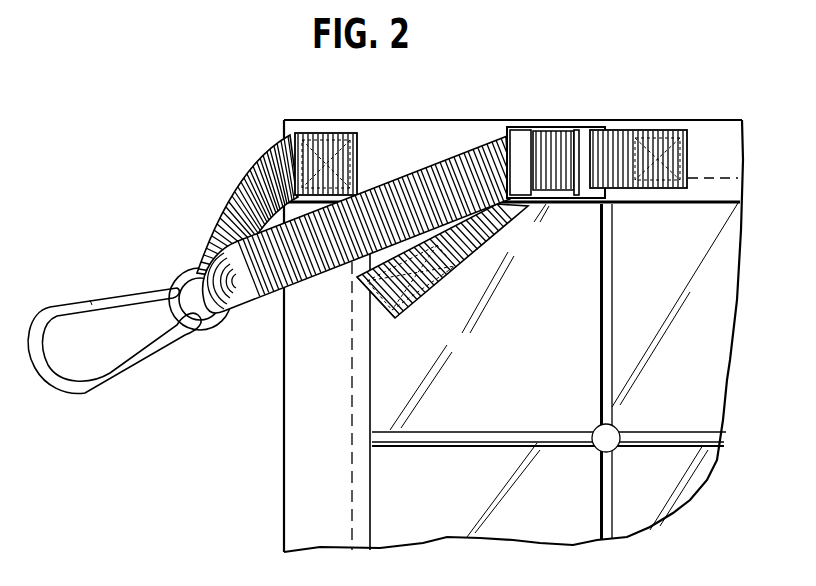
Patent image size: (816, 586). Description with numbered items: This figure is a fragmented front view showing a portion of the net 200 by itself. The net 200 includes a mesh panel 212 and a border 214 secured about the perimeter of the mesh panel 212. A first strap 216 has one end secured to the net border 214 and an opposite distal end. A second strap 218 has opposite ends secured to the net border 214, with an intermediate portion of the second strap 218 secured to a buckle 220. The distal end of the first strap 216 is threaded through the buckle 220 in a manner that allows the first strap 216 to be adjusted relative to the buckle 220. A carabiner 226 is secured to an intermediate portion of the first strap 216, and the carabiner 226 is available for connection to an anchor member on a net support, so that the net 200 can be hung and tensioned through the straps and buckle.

The net 200 is at (228, 479).
The mesh panel 212 is at (613, 278).
The border 214 is at (717, 140).
The first strap 216 is at (250, 182).
The second strap 218 is at (615, 150).
The buckle 220 is at (518, 132).
The carabiner 226 is at (137, 353).